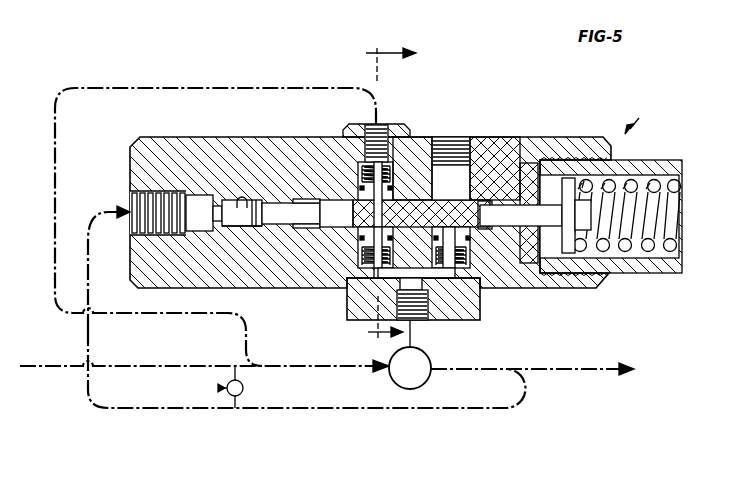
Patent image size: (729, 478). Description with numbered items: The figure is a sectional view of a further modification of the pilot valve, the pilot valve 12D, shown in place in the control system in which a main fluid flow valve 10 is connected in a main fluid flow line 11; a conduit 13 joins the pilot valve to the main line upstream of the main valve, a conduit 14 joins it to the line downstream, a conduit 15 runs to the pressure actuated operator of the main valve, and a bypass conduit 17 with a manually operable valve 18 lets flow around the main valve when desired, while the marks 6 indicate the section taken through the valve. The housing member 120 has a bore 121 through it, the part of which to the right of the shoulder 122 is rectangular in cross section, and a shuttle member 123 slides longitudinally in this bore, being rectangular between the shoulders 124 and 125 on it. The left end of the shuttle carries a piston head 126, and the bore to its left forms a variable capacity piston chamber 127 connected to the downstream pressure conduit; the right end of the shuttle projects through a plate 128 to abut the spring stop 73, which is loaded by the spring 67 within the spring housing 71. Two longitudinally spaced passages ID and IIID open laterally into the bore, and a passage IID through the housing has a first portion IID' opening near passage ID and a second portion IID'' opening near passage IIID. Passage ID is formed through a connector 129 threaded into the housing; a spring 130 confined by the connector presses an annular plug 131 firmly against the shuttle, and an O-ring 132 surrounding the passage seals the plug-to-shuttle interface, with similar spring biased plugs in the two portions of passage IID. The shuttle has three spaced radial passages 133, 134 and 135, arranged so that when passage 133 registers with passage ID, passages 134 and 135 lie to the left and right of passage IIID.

The main fluid flow valve 10 is at (425, 382).
The main fluid flow line 11 is at (163, 364).
The pilot valve 12D is at (641, 118).
The conduit 13 is at (238, 88).
The conduit 14 is at (106, 213).
The conduit 15 is at (407, 343).
The bypass conduit 17 is at (230, 384).
The manually operable valve 18 is at (246, 384).
The section line 6 is at (382, 186).
The compression spring 67 is at (676, 242).
The spring housing 71 is at (678, 160).
The spring stop 73 is at (573, 228).
The housing member 120 is at (218, 143).
The bore 121 is at (246, 200).
The shoulder 122 is at (298, 199).
The shuttle member 123 is at (331, 225).
The shoulder 124 is at (322, 175).
The shoulder 125 is at (533, 138).
The piston head 126 is at (243, 227).
The variable capacity piston chamber 127 is at (197, 200).
The plate 128 is at (536, 262).
The connector 129 is at (361, 197).
The spring 130 is at (449, 135).
The annular plug 131 is at (430, 207).
The O-ring 132 is at (463, 156).
The radial passage 133 is at (353, 227).
The radial passage 134 is at (476, 207).
The radial passage 135 is at (490, 206).
The passage ID is at (377, 158).
The passage IID is at (413, 311).
The first portion of passage IID IID' is at (357, 275).
The second portion of passage IID IID'' is at (481, 272).
The passage IIID is at (434, 202).